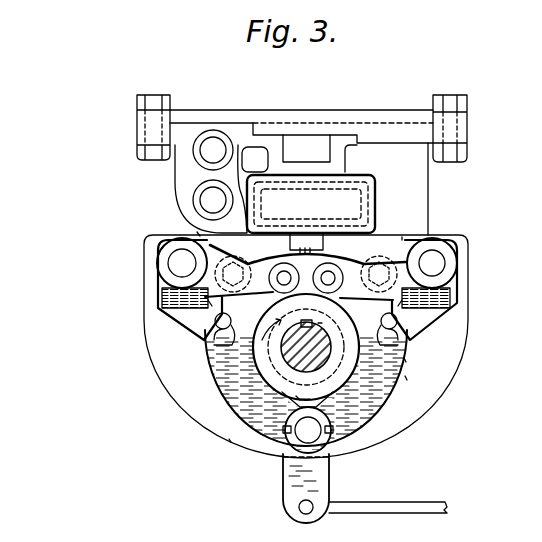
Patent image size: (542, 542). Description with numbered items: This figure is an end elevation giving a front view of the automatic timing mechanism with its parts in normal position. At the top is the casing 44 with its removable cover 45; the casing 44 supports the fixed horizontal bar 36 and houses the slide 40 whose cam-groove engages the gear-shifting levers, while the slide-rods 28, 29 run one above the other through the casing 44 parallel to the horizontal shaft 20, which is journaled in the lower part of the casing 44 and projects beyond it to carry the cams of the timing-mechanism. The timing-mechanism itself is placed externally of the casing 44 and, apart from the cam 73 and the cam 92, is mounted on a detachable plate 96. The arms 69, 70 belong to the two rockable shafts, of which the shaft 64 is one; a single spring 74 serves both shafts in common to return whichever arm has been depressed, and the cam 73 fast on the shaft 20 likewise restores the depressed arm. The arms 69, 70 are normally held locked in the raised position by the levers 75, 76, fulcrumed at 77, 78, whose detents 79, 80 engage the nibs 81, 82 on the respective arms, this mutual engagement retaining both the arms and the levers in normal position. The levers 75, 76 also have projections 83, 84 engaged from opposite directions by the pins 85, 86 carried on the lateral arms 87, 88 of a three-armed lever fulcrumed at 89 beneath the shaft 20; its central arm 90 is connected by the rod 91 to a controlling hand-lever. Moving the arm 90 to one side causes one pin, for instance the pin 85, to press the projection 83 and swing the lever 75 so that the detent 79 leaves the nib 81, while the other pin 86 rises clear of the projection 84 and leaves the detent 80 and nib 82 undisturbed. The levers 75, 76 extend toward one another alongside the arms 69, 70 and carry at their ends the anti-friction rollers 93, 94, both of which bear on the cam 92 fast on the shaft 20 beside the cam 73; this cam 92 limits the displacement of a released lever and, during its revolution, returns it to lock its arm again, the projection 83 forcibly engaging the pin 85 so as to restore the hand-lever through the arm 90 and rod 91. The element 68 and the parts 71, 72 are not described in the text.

The shaft 20 is at (300, 374).
The slide-rod 28 is at (221, 181).
The slide-rod 29 is at (213, 200).
The fixed horizontal bar 36 is at (306, 148).
The slide 40 is at (362, 203).
The casing 44 is at (431, 198).
The removable cover 45 is at (306, 118).
The shaft 64 is at (402, 240).
The frame top 68 is at (198, 233).
The arm 69 is at (305, 282).
The arm 70 is at (366, 308).
The pivot pin 71 is at (286, 294).
The pivot pin 72 is at (327, 294).
The cam 73 is at (297, 396).
The spring 74 is at (268, 255).
The lever 75 is at (173, 317).
The lever 76 is at (440, 314).
The fulcrum 77 is at (182, 263).
The fulcrum 78 is at (432, 263).
The detent 79 is at (164, 297).
The detent 80 is at (452, 299).
The nib 81 is at (210, 305).
The nib 82 is at (400, 305).
The projection 83 is at (207, 349).
The projection 84 is at (404, 348).
The pin 85 is at (214, 364).
The pin 86 is at (404, 360).
The lateral arm 87 is at (203, 388).
The lateral arm 88 is at (403, 378).
The fulcrum 89 is at (312, 434).
The central arm 90 is at (288, 482).
The rod 91 is at (391, 506).
The cam 92 is at (329, 392).
The anti-friction roller 93 is at (279, 328).
The anti-friction roller 94 is at (328, 324).
The detachable plate 96 is at (230, 440).